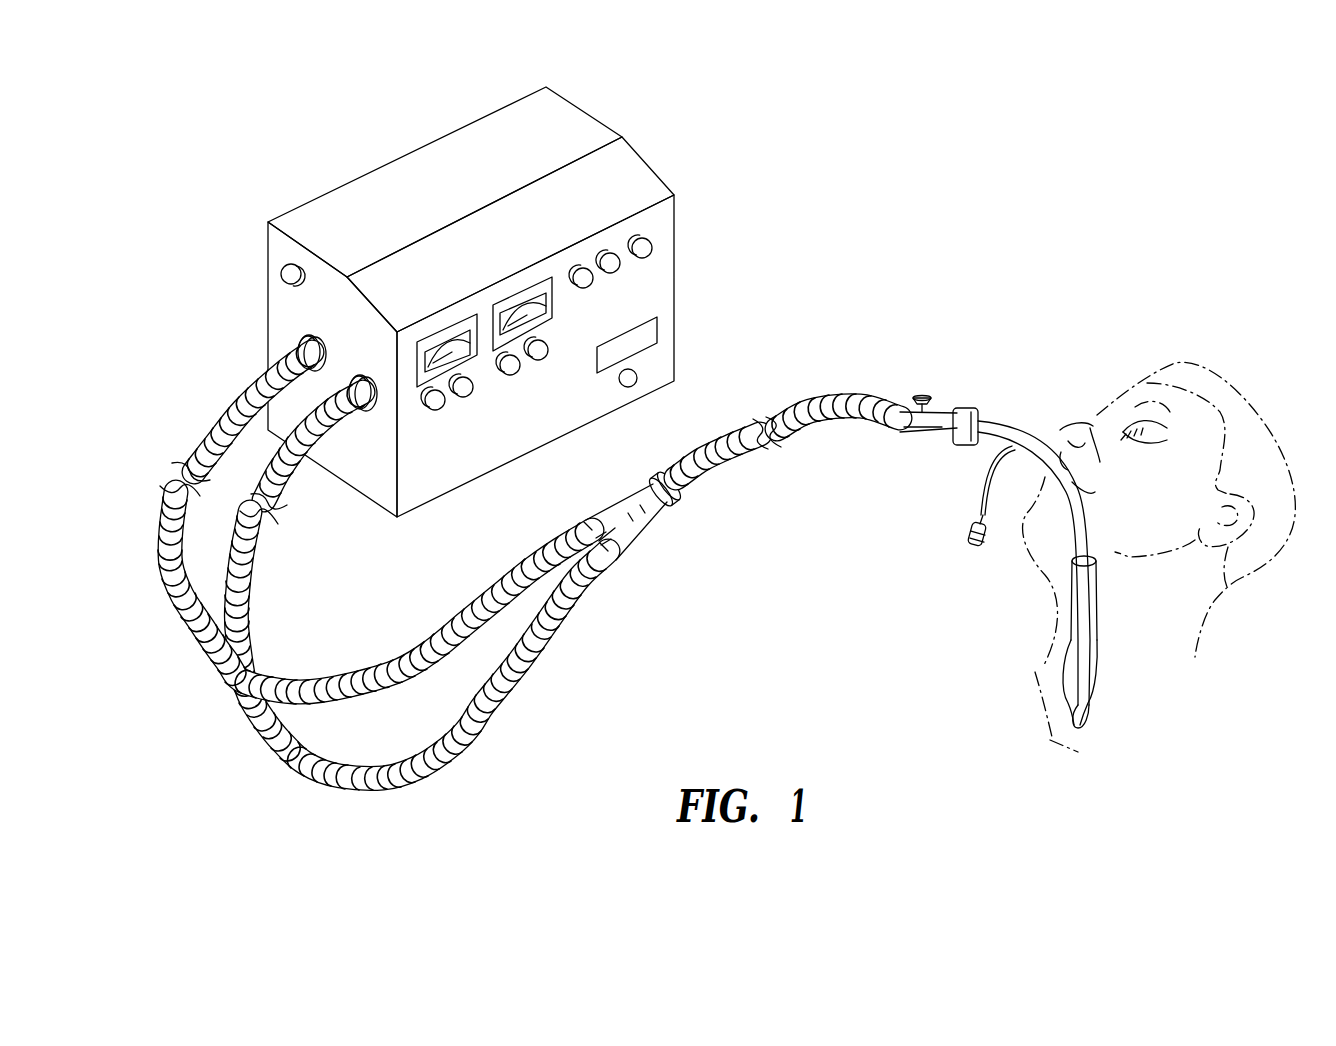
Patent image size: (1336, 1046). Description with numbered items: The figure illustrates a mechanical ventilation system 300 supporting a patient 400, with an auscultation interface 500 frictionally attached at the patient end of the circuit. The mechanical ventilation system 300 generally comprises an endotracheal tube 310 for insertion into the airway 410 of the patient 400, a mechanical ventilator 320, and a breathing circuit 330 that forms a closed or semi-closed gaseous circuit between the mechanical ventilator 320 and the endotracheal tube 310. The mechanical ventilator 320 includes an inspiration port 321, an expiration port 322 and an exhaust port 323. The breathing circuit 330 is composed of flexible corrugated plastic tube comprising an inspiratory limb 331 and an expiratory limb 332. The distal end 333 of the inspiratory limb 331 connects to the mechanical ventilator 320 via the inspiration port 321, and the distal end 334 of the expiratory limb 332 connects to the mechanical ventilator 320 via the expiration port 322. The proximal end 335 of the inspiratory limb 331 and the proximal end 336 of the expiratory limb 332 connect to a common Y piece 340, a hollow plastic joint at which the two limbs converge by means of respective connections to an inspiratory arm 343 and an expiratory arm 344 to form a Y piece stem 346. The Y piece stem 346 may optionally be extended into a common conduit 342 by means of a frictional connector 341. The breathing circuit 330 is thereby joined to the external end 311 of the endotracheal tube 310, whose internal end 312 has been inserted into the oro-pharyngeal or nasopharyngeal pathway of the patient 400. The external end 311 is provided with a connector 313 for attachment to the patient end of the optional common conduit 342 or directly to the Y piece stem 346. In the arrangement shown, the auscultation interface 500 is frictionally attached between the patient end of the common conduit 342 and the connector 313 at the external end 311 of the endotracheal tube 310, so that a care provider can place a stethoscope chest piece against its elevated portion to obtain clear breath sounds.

The mechanical ventilation system 300 is at (1010, 168).
The patient 400 is at (1165, 519).
The mechanical ventilator 320 is at (440, 302).
The inspiration port 321 is at (301, 340).
The expiration port 322 is at (351, 377).
The exhaust port 323 is at (281, 272).
The breathing circuit 330 is at (388, 562).
The inspiratory limb 331 is at (184, 512).
The expiratory limb 332 is at (250, 570).
The distal end of inspiratory limb 333 is at (304, 372).
The distal end of expiratory limb 334 is at (357, 411).
The proximal end of inspiratory limb 335 is at (576, 528).
The proximal end of expiratory limb 336 is at (576, 572).
The Y piece 340 is at (642, 518).
The connector 341 is at (648, 491).
The common conduit 342 is at (742, 448).
The inspiratory arm 343 is at (598, 527).
The expiratory arm 344 is at (613, 543).
The Y piece stem 346 is at (640, 513).
The auscultation interface 500 is at (922, 422).
The connector 313 is at (958, 422).
The external end of endotracheal tube 311 is at (985, 425).
The endotracheal tube 310 is at (1070, 543).
The internal end of endotracheal tube 312 is at (1072, 712).
The airway 410 is at (1098, 596).